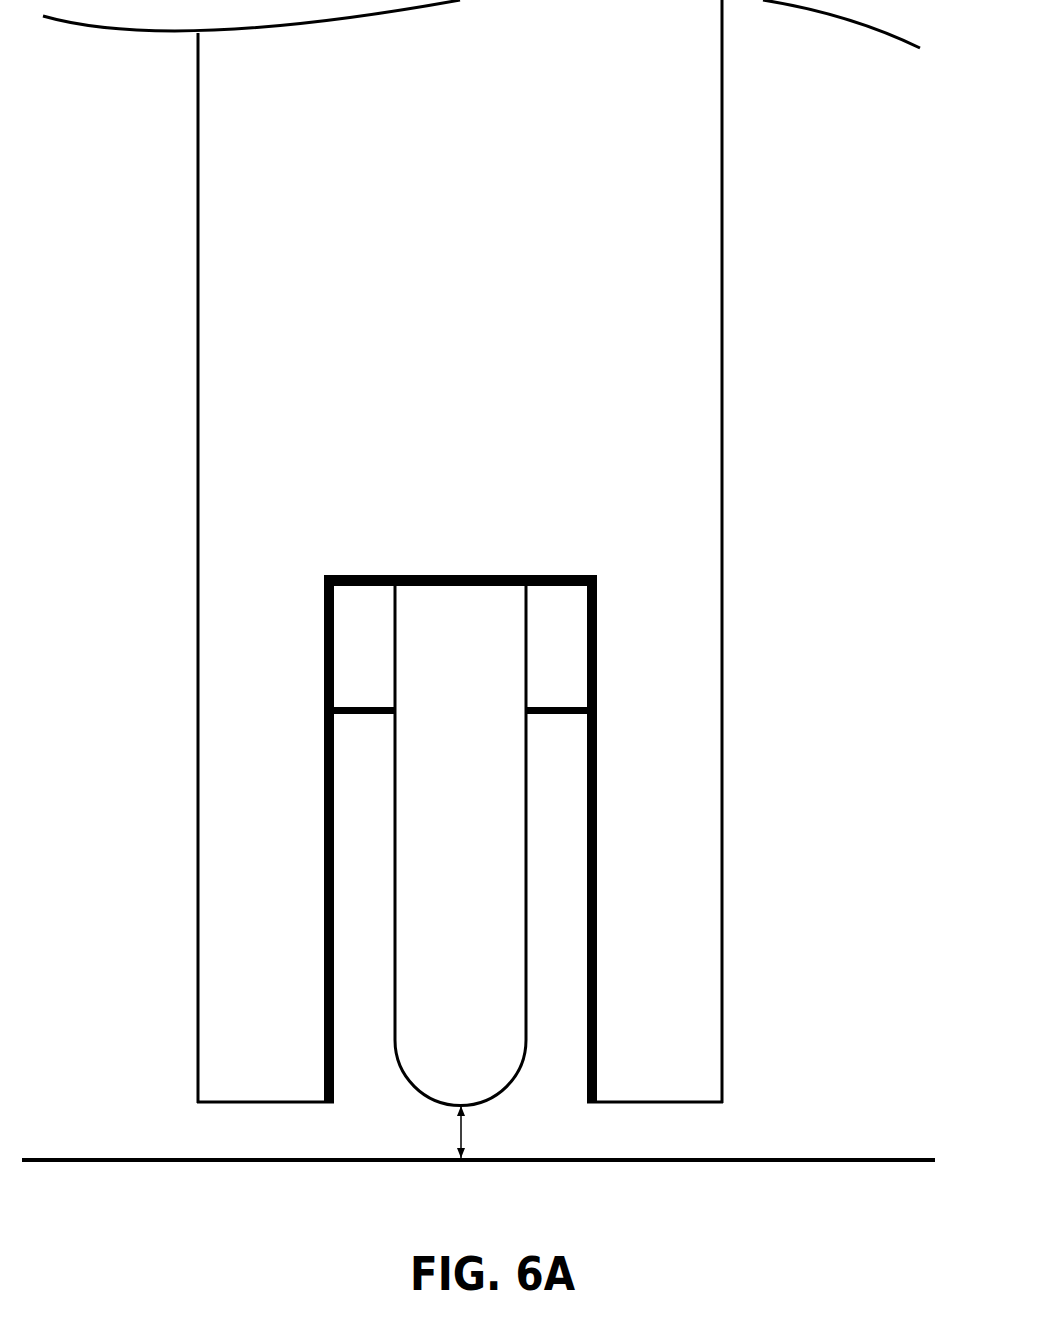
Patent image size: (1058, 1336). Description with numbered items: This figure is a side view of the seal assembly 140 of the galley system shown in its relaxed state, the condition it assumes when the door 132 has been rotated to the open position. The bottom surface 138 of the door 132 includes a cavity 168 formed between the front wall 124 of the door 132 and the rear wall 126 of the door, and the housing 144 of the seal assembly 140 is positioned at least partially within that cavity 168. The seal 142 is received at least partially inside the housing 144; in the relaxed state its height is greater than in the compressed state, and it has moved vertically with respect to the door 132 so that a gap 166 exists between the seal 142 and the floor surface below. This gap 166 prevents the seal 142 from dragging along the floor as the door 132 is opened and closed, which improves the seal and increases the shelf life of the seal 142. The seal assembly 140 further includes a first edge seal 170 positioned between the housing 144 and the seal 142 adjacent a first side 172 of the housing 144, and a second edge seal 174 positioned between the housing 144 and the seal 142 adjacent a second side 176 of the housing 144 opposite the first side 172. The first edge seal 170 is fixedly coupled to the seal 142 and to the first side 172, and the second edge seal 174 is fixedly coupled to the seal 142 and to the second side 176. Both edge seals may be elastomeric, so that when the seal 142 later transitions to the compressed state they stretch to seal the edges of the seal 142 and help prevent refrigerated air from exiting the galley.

The front wall 124 is at (197, 688).
The rear wall 126 is at (724, 497).
The door 132 is at (198, 430).
The bottom surface 138 is at (262, 1105).
The seal assembly 140 is at (455, 565).
The seal 142 is at (395, 903).
The housing 144 is at (325, 806).
The gap 166 is at (463, 1138).
The cavity 168 is at (371, 1025).
The first edge seal 170 is at (362, 706).
The first side 172 is at (323, 768).
The second edge seal 174 is at (557, 706).
The second side 176 is at (598, 770).